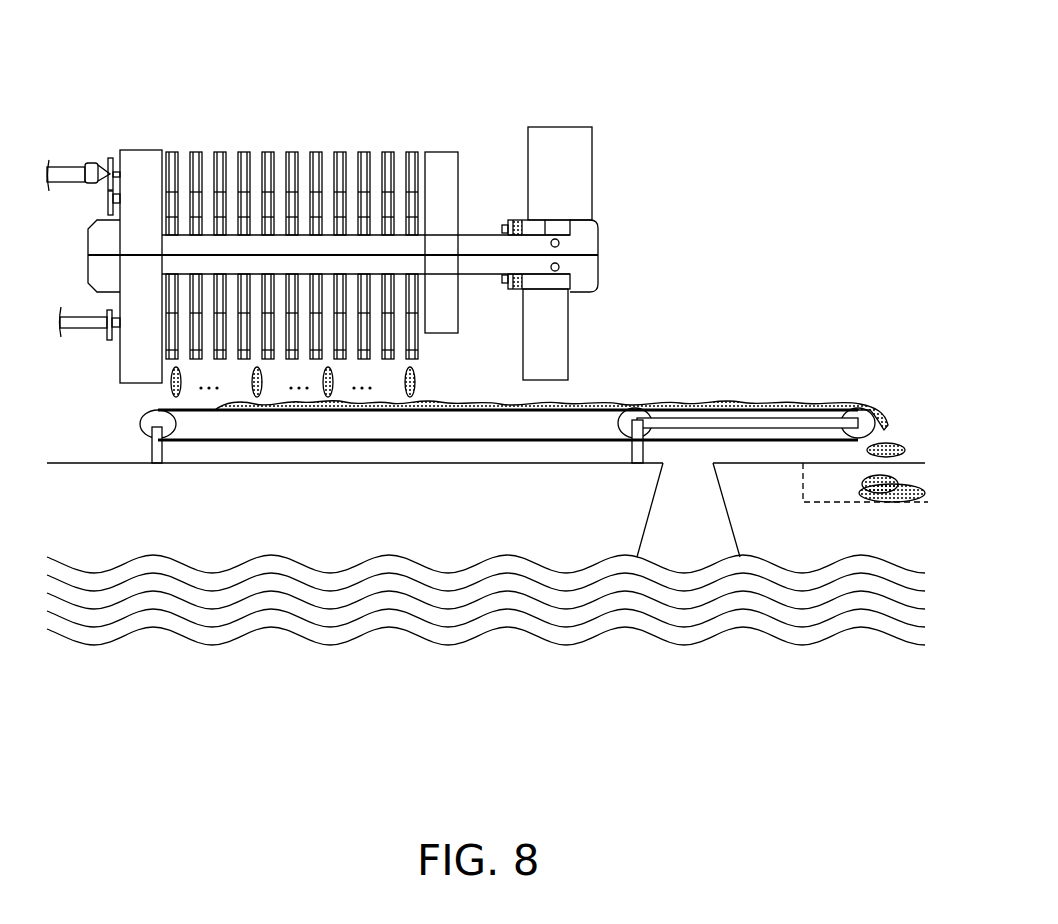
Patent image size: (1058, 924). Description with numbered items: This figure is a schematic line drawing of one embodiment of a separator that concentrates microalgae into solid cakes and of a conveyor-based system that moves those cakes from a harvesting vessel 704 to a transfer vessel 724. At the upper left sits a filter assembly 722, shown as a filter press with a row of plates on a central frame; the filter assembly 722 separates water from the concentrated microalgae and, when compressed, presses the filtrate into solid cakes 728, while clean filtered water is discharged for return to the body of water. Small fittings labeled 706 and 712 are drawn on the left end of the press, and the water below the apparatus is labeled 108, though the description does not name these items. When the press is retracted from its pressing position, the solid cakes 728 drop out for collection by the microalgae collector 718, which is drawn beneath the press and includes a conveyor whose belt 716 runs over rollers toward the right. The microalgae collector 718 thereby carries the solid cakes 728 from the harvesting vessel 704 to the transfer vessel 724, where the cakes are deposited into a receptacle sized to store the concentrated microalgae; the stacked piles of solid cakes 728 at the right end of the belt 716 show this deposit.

The filter assembly 722 is at (167, 84).
The feed inlet nozzle 706 is at (52, 164).
The filtrate outlet pipe 712 is at (93, 333).
The microalgae collector 718 is at (669, 352).
The conveyor belt 716 is at (440, 445).
The solid cake 728 is at (787, 403).
The harvesting vessel 704 is at (655, 520).
The transfer vessel 724 is at (728, 520).
The body of water 108 is at (182, 708).